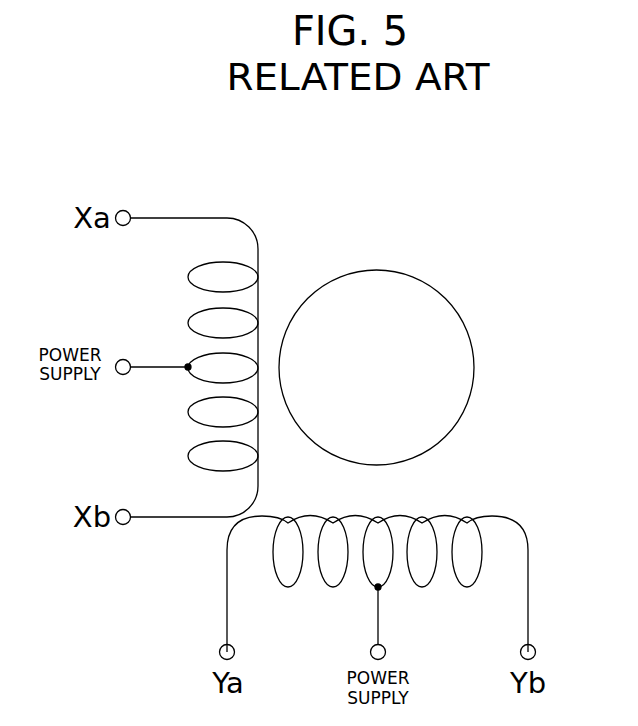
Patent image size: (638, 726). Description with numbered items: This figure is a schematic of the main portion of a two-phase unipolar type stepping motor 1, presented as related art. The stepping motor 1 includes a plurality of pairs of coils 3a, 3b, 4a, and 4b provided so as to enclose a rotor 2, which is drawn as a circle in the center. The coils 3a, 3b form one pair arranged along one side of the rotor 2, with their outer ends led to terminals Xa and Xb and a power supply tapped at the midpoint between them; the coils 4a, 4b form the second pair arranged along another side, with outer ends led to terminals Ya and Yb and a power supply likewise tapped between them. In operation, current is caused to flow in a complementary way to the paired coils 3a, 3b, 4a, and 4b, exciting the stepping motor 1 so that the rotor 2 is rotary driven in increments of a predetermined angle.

The stepping motor 1 is at (514, 300).
The rotor 2 is at (438, 388).
The coil 3a is at (192, 308).
The coil 3b is at (188, 437).
The coil 4a is at (318, 583).
The coil 4b is at (445, 583).